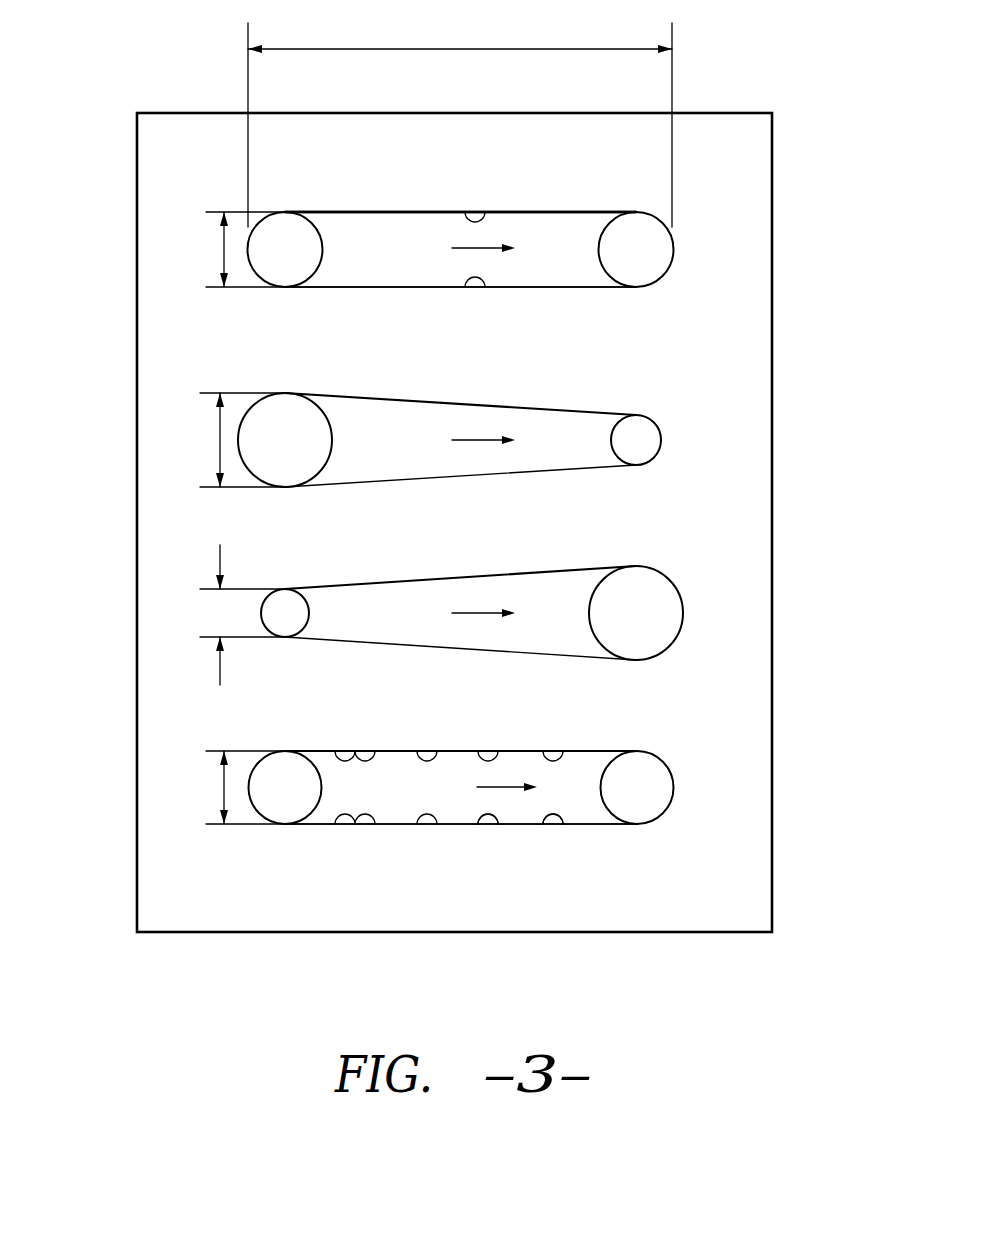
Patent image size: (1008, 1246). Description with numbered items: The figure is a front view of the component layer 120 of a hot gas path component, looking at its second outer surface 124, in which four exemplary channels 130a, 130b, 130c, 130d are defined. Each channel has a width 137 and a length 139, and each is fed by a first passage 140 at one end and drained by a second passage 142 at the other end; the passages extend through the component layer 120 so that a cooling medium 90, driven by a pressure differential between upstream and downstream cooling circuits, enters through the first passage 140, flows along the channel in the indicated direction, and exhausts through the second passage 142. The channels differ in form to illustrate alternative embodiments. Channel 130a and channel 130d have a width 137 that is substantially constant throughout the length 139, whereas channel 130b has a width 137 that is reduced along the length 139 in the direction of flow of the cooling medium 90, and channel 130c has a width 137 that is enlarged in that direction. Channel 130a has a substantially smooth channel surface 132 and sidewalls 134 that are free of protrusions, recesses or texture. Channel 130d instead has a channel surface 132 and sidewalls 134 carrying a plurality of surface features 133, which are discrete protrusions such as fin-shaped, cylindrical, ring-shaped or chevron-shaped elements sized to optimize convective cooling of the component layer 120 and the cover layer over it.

The component layer 120 is at (202, 112).
The second outer surface 124 is at (178, 307).
The channel 130a is at (560, 250).
The channel 130b is at (548, 442).
The channel 130c is at (542, 610).
The channel 130d is at (577, 782).
The channel surface 132 is at (530, 220).
The surface features 133 is at (488, 826).
The sidewalls 134 is at (463, 213).
The width 137 is at (222, 248).
The length 139 is at (377, 48).
The first passages 140 is at (261, 265).
The second passages 142 is at (612, 265).
The cooling medium 90 is at (473, 520).